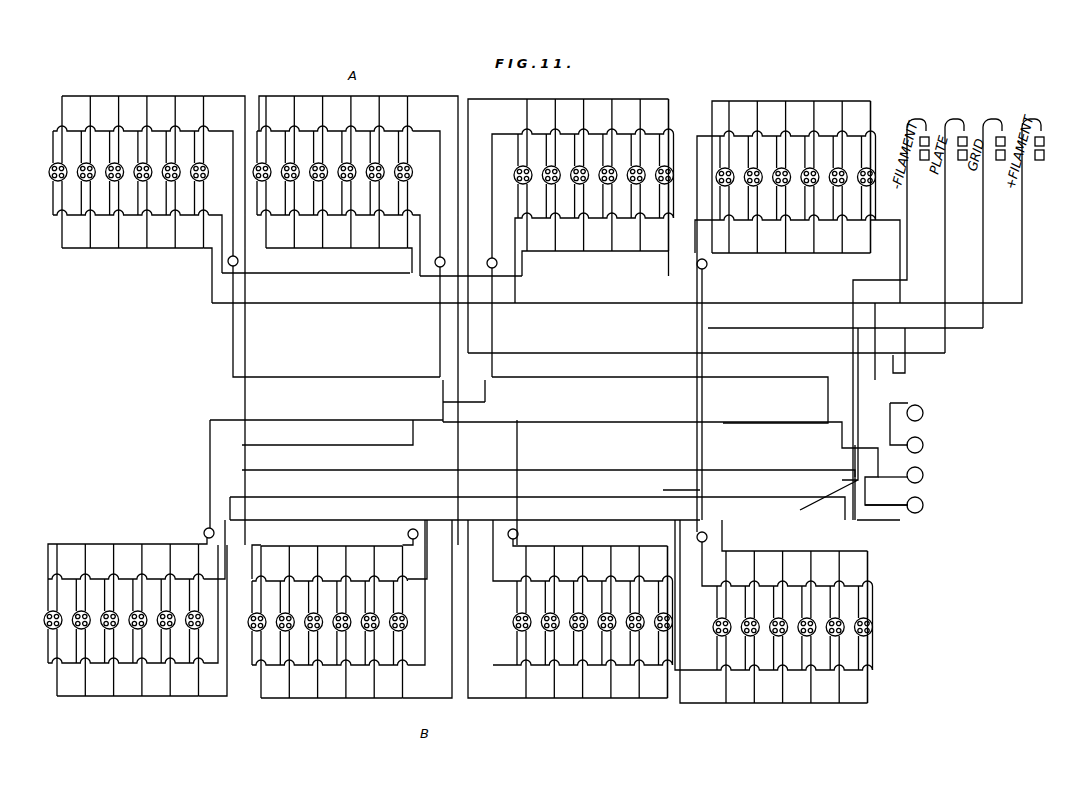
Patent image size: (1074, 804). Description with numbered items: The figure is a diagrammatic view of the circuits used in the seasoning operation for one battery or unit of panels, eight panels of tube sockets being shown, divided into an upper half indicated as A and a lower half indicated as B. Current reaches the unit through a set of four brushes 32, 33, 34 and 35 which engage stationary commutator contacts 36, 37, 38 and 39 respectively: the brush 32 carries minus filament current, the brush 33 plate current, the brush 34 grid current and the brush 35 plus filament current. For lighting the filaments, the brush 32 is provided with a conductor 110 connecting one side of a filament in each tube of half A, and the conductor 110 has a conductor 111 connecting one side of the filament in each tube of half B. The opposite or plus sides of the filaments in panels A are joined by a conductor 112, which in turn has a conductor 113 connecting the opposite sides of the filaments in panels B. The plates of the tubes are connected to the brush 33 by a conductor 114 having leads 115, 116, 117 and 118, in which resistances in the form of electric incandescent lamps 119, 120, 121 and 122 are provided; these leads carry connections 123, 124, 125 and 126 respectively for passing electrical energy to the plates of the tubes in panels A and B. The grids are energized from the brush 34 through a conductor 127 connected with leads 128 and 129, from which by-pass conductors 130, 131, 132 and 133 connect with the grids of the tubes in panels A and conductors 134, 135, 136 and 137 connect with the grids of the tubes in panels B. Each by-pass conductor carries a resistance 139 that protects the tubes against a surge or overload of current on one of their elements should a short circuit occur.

The brush 32 is at (926, 130).
The brush 33 is at (964, 130).
The brush 34 is at (1002, 130).
The brush 35 is at (1041, 130).
The stationary commutator contact 36 is at (920, 157).
The stationary commutator contact 37 is at (958, 157).
The stationary commutator contact 38 is at (996, 157).
The stationary commutator contact 39 is at (1035, 157).
The conductor 110 is at (370, 273).
The conductor 111 is at (875, 322).
The conductor 112 is at (606, 303).
The conductor 113 is at (845, 324).
The conductor 114 is at (945, 262).
The lead 115 is at (910, 510).
The lead 116 is at (905, 480).
The lead 117 is at (890, 412).
The lead 118 is at (915, 352).
The electric incandescent lamp 119 is at (925, 497).
The electric incandescent lamp 120 is at (925, 467).
The electric incandescent lamp 121 is at (925, 437).
The electric incandescent lamp 122 is at (925, 405).
The connection 123 is at (242, 452).
The connection 124 is at (443, 417).
The connection 125 is at (540, 364).
The connection 126 is at (760, 338).
The conductor 127 is at (983, 278).
The lead 128 is at (605, 380).
The lead 129 is at (608, 425).
The by-pass conductor 130 is at (702, 335).
The by-pass conductor 131 is at (492, 338).
The by-pass conductor 132 is at (440, 325).
The by-pass conductor 133 is at (233, 345).
The conductor 134 is at (702, 490).
The conductor 135 is at (520, 487).
The conductor 136 is at (413, 450).
The conductor 137 is at (208, 446).
The resistance 139 is at (727, 537).